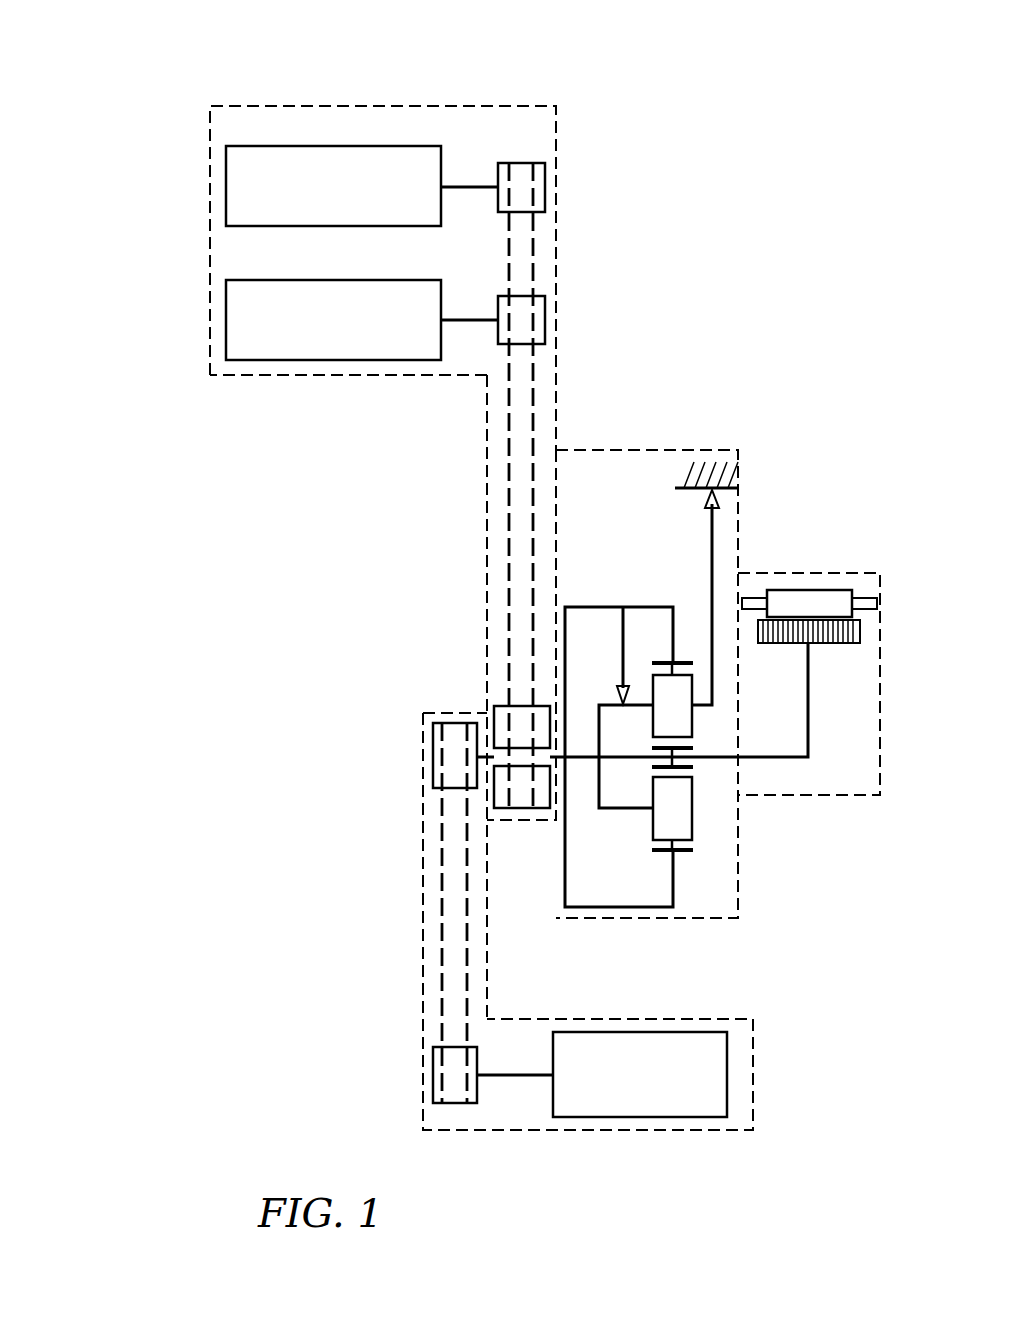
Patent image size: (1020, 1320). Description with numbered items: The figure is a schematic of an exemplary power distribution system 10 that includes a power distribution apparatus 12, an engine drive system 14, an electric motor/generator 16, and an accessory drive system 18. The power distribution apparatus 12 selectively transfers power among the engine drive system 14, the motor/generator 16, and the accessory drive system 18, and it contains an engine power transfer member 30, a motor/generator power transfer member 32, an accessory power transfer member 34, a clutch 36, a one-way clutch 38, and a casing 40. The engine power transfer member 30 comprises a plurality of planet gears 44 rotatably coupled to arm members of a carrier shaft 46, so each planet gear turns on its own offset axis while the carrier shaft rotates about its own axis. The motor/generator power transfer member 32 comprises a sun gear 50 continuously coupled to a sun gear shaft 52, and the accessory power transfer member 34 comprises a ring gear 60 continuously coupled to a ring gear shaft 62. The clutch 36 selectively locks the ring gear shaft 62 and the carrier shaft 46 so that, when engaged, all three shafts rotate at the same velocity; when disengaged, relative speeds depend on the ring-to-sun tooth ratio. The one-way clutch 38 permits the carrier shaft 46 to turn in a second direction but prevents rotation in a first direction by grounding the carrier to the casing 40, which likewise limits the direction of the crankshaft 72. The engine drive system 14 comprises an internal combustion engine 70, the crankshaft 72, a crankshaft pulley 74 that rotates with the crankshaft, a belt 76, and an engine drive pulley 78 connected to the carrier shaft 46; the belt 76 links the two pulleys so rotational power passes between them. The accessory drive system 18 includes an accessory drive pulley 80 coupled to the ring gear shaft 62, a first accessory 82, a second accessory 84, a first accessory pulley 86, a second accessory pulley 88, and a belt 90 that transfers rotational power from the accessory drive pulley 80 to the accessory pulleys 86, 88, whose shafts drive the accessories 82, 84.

The power distribution system 10 is at (122, 78).
The power distribution apparatus 12 is at (738, 900).
The engine drive system 14 is at (746, 1021).
The electric motor/generator 16 is at (846, 573).
The accessory drive system 18 is at (235, 106).
The engine power transfer member 30 is at (599, 748).
The motor/generator power transfer member 32 is at (656, 757).
The accessory power transfer member 34 is at (643, 607).
The clutch 36 is at (620, 690).
The one-way clutch 38 is at (718, 506).
The casing 40 is at (684, 468).
The planet gears 44 is at (693, 720).
The carrier shaft 46 is at (593, 760).
The sun gear 50 is at (692, 770).
The sun gear shaft 52 is at (762, 757).
The ring gear 60 is at (683, 660).
The ring gear shaft 62 is at (553, 735).
The internal combustion engine 70 is at (618, 1105).
The crankshaft 72 is at (510, 1073).
The crankshaft pulley 74 is at (433, 1077).
The belt 76 is at (442, 922).
The engine drive pulley 78 is at (435, 752).
The accessory drive pulley 80 is at (494, 712).
The first accessory 82 is at (436, 155).
The second accessory 84 is at (400, 288).
The first accessory pulley 86 is at (548, 187).
The second accessory pulley 88 is at (548, 320).
The belt 90 is at (533, 450).